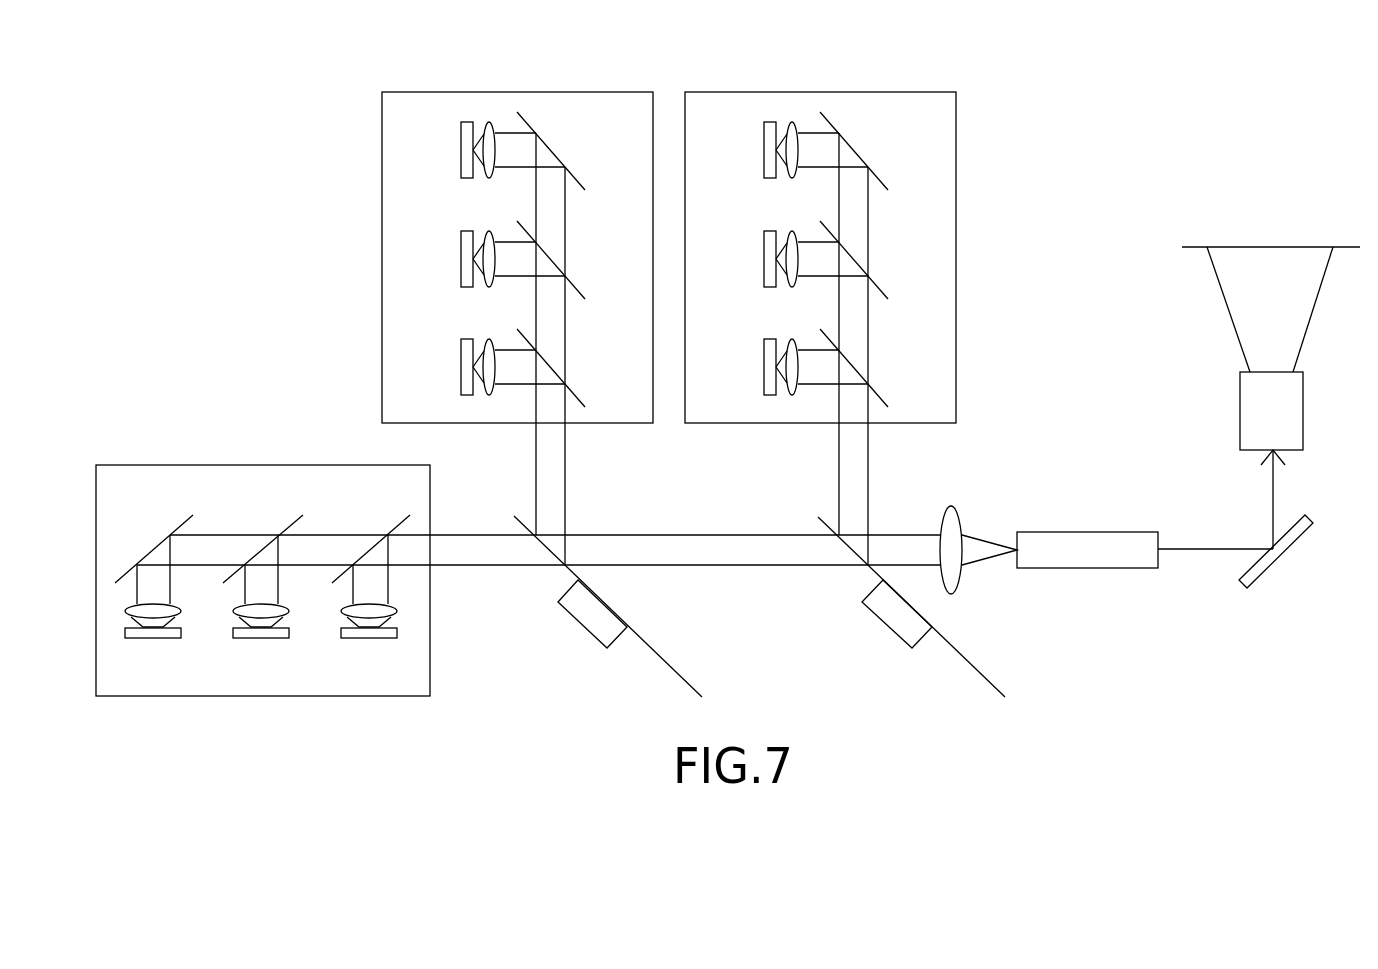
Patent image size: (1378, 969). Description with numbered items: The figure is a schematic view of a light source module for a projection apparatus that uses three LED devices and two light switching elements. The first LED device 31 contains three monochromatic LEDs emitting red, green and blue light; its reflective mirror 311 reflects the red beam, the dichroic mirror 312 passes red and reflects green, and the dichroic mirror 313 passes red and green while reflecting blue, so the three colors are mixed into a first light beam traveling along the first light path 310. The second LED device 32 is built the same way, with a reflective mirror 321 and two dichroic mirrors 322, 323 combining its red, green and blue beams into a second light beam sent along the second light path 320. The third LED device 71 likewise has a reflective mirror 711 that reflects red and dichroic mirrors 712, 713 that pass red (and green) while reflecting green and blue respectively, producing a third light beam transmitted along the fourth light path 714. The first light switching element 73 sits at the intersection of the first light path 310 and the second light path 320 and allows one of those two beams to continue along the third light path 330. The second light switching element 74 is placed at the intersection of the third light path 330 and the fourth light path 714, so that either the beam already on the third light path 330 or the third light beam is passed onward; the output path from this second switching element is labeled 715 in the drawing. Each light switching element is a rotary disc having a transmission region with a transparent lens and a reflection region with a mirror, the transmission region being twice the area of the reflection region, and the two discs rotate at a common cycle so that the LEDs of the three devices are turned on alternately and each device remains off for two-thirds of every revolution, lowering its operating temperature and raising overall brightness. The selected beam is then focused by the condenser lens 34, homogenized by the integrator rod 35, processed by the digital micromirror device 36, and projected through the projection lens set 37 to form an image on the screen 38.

The first LED device 31 is at (218, 477).
The reflective mirror 311 is at (180, 523).
The dichroic mirror 312 is at (290, 523).
The dichroic mirror 313 is at (398, 523).
The first light path 310 is at (505, 555).
The second LED device 32 is at (555, 105).
The reflective mirror 321 is at (553, 150).
The dichroic mirror 322 is at (553, 257).
The dichroic mirror 323 is at (555, 363).
The second light path 320 is at (545, 490).
The third light path 330 is at (645, 545).
The third LED device 71 is at (858, 105).
The reflective mirror 711 is at (856, 150).
The dichroic mirror 712 is at (856, 257).
The dichroic mirror 713 is at (858, 363).
The fourth light path 714 is at (848, 490).
The combined light beam 715 is at (895, 542).
The first light switching element 73 is at (593, 617).
The second light switching element 74 is at (895, 617).
The condenser lens 34 is at (953, 575).
The integrator rod 35 is at (1103, 543).
The digital micromirror device 36 is at (1290, 538).
The projection lens set 37 is at (1292, 420).
The screen 38 is at (1287, 245).